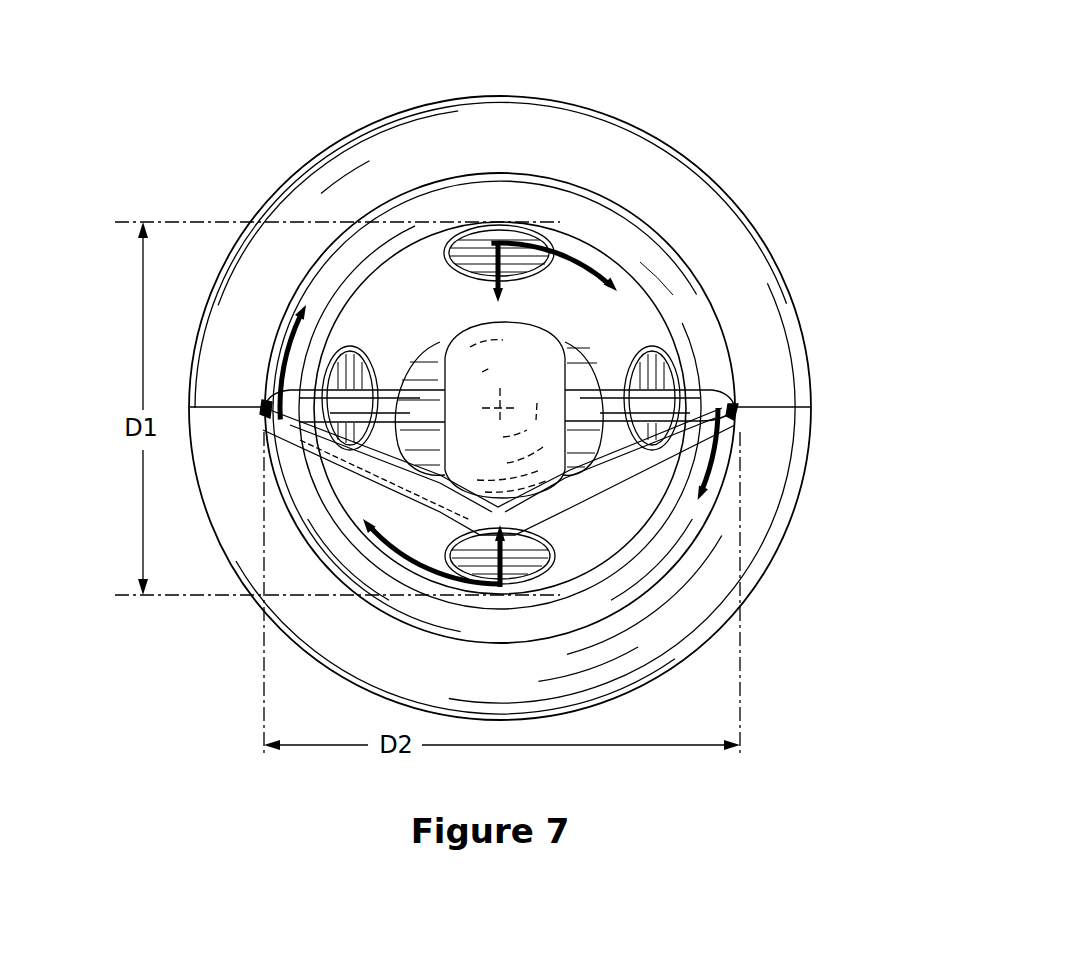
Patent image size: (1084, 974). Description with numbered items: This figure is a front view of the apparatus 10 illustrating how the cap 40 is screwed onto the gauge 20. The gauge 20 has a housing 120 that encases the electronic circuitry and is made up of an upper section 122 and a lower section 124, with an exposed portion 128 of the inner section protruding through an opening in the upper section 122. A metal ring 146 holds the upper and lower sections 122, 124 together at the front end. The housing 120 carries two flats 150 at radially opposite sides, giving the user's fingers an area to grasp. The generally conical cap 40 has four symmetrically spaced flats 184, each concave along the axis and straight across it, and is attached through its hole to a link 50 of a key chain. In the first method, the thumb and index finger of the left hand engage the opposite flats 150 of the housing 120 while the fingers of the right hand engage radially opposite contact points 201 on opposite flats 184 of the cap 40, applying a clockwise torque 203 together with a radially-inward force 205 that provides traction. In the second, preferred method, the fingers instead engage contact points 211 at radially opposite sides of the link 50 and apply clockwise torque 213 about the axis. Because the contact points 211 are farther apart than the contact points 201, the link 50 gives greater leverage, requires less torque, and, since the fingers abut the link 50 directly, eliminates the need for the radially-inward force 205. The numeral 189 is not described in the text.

The apparatus 10 is at (680, 66).
The gauge 20 is at (668, 130).
The cap 40 is at (645, 240).
The link 50 is at (620, 470).
The housing 120 is at (760, 220).
The upper section 122 is at (770, 270).
The lower section 124 is at (790, 527).
The exposed portion 128 is at (546, 95).
The metal ring 146 is at (673, 295).
The flats 150 is at (190, 373).
The flats 184 is at (342, 372).
The hub centerline 189 is at (503, 407).
The contact points 201 is at (493, 235).
The clockwise torque 203 is at (583, 265).
The radially-inward force 205 is at (490, 262).
The contact points 211 is at (262, 402).
The clockwise torque 213 is at (283, 365).